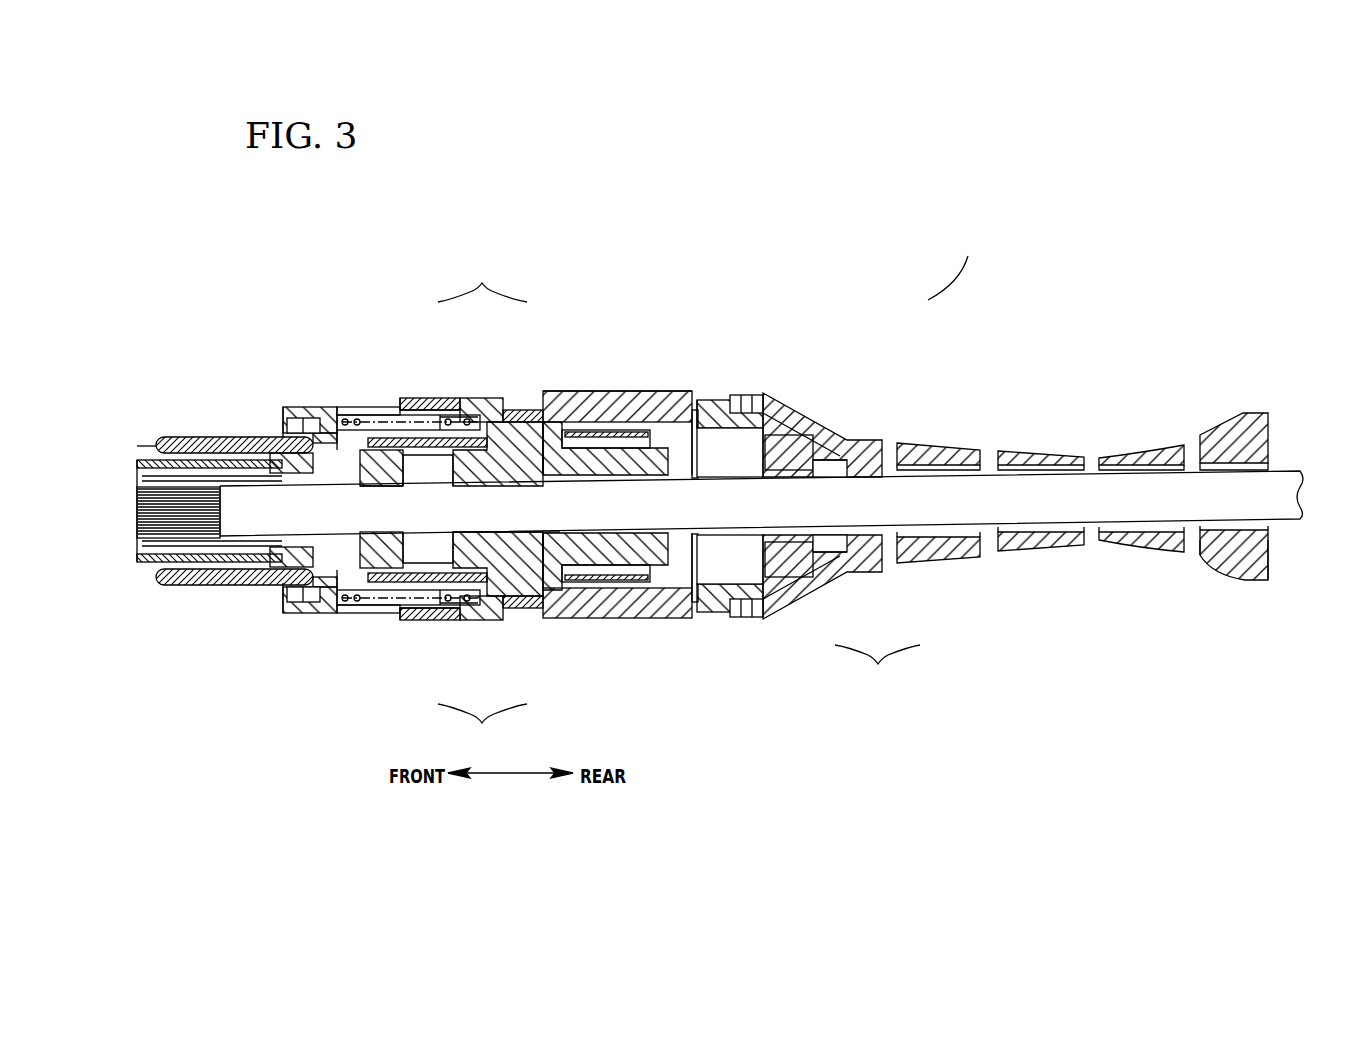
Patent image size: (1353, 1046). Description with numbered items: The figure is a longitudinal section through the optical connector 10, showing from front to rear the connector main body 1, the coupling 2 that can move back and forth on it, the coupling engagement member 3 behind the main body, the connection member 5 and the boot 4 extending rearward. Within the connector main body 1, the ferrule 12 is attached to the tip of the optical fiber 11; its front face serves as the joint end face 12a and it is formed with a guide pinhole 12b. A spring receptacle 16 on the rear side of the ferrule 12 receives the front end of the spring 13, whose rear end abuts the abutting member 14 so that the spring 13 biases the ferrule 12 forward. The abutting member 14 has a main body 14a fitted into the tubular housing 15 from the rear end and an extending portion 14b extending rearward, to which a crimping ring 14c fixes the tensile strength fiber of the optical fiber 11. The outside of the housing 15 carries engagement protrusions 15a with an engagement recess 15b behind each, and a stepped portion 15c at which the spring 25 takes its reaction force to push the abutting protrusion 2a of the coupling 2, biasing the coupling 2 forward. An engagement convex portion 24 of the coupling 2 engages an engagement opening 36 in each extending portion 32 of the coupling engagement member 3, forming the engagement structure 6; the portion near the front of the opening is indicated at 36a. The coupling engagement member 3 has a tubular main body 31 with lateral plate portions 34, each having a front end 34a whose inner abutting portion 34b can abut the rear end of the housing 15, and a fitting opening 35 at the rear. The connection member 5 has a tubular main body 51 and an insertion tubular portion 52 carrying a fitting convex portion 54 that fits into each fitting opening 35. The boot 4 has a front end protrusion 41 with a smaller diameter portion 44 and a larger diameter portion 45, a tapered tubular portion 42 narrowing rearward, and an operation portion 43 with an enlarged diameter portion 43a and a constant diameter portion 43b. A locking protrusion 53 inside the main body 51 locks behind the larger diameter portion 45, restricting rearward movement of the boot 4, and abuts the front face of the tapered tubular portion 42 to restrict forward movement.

The connector main body 1 is at (222, 436).
The coupling 2 is at (333, 436).
The abutting protrusion 2a is at (335, 476).
The coupling engagement member 3 is at (660, 391).
The boot 4 is at (1040, 452).
The connection member 5 is at (770, 395).
The engagement structure 6 is at (482, 505).
The optical connector 10 is at (920, 312).
The optical fiber 11 is at (1290, 470).
The ferrule 12 is at (152, 460).
The joint end face 12a is at (140, 508).
The guide pinhole 12b is at (142, 546).
The spring 13 is at (313, 410).
The abutting member 14 is at (500, 440).
The main body 14a is at (362, 478).
The extending portion 14b is at (590, 566).
The crimping ring 14c is at (640, 594).
The housing 15 is at (390, 416).
The engagement protrusion 15a is at (262, 438).
The engagement recess 15b is at (295, 418).
The stepped portion 15c is at (466, 416).
The spring receptacle 16 is at (342, 605).
The engagement convex portion 24 is at (478, 400).
The spring 25 is at (352, 408).
The tubular main body 31 is at (627, 391).
The extending portion 32 is at (412, 398).
The lateral plate portion 34 is at (585, 395).
The front end 34a is at (535, 432).
The abutting portion 34b is at (528, 536).
The fitting opening 35 is at (695, 408).
The engagement opening 36 is at (497, 398).
The outer frame front end 36a is at (468, 410).
The front end protrusion 41 is at (810, 428).
The tapered tubular portion 42 is at (940, 444).
The operation portion 43 is at (1240, 413).
The enlarged diameter portion 43a is at (1220, 578).
The constant diameter portion 43b is at (1250, 580).
The smaller diameter portion 44 is at (868, 568).
The larger diameter portion 45 is at (828, 575).
The tubular main body 51 is at (790, 398).
The insertion tubular portion 52 is at (745, 395).
The locking protrusion 53 is at (836, 540).
The fitting convex portion 54 is at (715, 400).